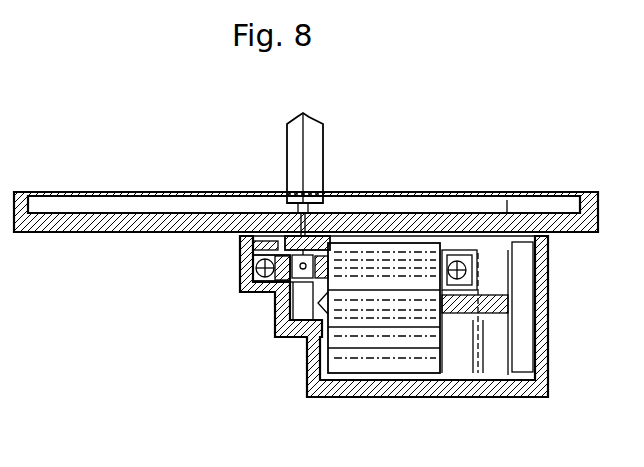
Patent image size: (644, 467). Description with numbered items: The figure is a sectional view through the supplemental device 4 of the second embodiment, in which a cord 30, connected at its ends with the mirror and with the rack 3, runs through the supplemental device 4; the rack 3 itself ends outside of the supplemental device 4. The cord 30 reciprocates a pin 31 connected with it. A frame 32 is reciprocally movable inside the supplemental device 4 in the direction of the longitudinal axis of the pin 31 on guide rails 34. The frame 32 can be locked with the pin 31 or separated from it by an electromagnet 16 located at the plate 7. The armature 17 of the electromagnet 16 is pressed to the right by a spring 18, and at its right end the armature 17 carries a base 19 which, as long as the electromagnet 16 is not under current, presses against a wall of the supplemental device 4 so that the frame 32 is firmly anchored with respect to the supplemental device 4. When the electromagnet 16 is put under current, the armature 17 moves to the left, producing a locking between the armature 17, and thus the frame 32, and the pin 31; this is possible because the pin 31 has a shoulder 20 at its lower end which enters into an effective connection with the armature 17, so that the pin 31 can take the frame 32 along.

The rack 3 is at (314, 159).
The supplemental device 4 is at (542, 340).
The table plate 7 is at (522, 202).
The electromagnet 16 is at (330, 364).
The armature 17 is at (313, 377).
The spring 18 is at (510, 293).
The base 19 is at (533, 311).
The shoulder 20 is at (302, 328).
The cord 30 is at (322, 207).
The pin 31 is at (297, 230).
The frame 32 is at (273, 297).
The guide rails 34 is at (473, 250).